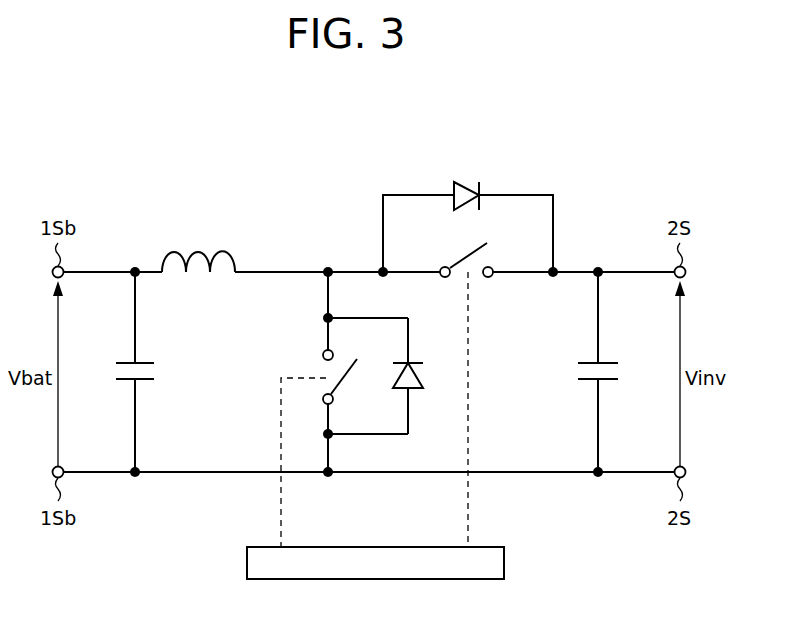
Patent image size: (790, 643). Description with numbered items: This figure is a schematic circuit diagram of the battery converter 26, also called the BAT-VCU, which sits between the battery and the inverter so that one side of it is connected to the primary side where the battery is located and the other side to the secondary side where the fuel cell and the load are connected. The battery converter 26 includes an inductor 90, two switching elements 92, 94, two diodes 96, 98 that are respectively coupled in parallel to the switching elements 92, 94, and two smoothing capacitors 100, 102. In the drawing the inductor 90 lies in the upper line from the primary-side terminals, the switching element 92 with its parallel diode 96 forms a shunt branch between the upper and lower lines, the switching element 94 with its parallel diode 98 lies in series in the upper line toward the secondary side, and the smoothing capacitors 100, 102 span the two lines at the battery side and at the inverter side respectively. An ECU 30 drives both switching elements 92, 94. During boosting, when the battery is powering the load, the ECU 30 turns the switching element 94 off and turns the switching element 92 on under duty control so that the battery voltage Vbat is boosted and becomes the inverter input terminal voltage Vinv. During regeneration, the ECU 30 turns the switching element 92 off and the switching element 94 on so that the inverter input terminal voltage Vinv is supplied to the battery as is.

The battery converter 26 is at (368, 148).
The ECU 30 is at (504, 556).
The inductor 90 is at (232, 252).
The switching element 92 is at (323, 352).
The switching element 94 is at (489, 278).
The diode 96 is at (398, 383).
The diode 98 is at (466, 182).
The smoothing capacitor 100 is at (154, 374).
The smoothing capacitor 102 is at (617, 373).